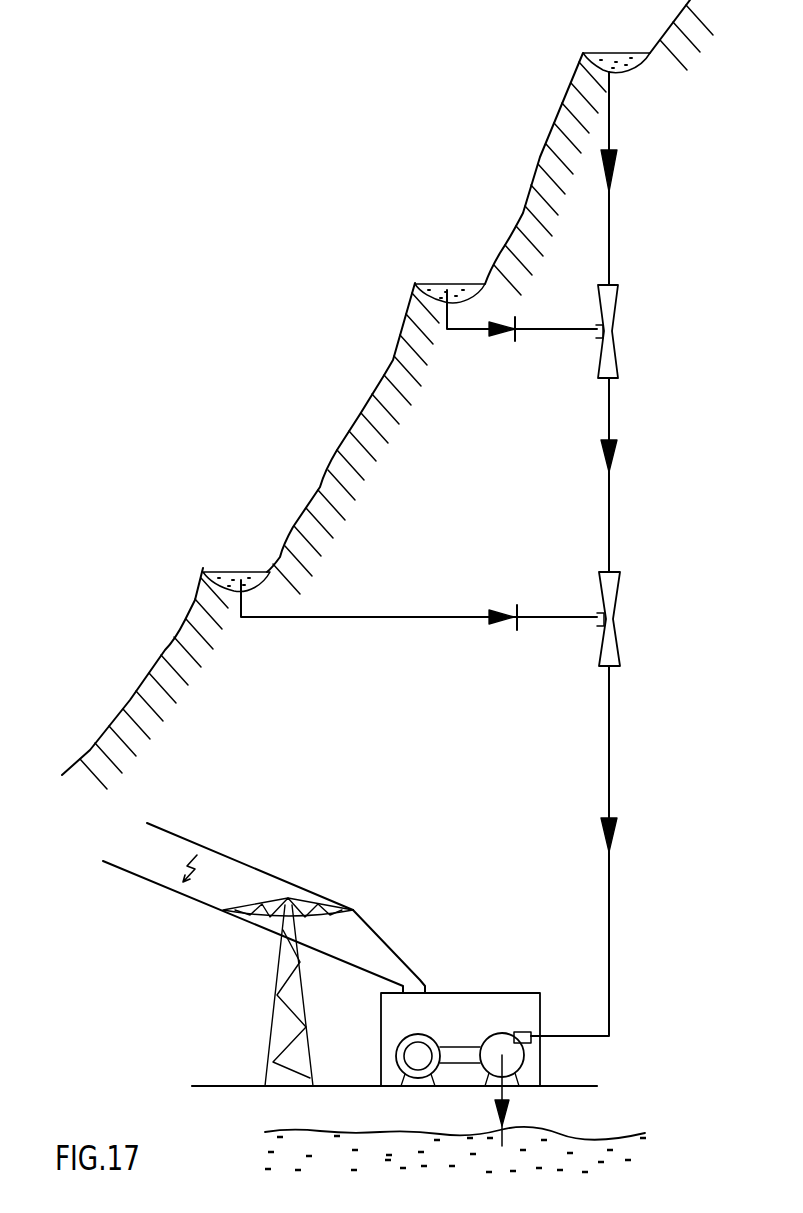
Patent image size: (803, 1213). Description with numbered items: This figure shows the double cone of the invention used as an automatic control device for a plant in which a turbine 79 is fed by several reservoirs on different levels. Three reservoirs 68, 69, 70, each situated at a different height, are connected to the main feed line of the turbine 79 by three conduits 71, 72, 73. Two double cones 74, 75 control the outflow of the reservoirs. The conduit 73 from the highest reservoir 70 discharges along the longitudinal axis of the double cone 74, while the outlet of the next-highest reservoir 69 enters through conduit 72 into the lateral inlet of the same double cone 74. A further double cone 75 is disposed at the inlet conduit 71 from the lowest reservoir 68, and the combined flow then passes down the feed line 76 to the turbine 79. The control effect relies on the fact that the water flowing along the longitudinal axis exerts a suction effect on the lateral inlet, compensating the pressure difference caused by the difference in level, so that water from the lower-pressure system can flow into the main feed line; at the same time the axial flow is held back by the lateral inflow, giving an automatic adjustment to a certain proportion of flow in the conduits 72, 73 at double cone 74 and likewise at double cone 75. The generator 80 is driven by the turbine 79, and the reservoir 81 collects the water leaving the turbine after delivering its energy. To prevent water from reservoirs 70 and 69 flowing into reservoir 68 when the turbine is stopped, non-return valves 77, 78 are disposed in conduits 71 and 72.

The reservoir 68 is at (238, 572).
The reservoir 69 is at (445, 284).
The reservoir 70 is at (619, 52).
The conduit 71 is at (403, 618).
The conduit 72 is at (563, 329).
The conduit 73 is at (612, 226).
The double cone 74 is at (621, 336).
The double cone 75 is at (622, 626).
The penstock to powerhouse 76 is at (611, 890).
The non-return valve 77 is at (512, 633).
The non-return valve 78 is at (507, 344).
The turbine 79 is at (526, 1062).
The generator 80 is at (410, 1057).
The reservoir 81 is at (605, 1140).